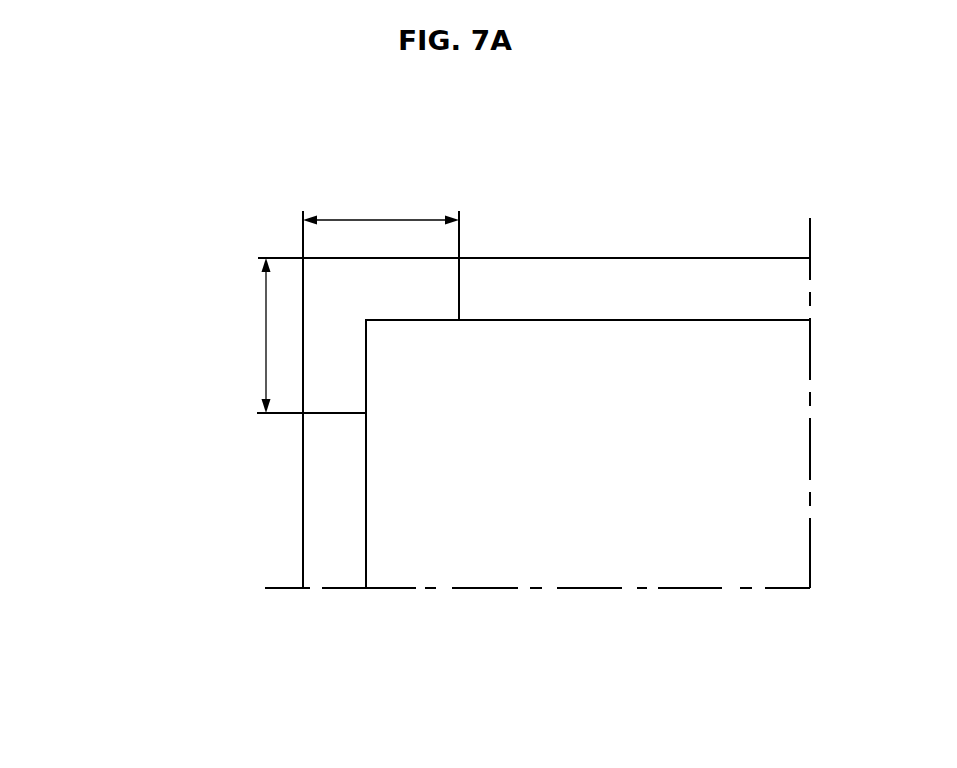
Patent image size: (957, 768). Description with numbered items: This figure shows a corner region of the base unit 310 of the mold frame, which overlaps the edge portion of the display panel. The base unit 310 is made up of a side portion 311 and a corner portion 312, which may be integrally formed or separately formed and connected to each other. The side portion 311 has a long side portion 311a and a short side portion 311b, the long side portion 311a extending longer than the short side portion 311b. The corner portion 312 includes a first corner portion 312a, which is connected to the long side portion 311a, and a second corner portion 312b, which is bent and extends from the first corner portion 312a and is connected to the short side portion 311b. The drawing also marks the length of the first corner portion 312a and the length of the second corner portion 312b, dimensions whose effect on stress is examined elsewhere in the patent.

The base unit 310 is at (325, 148).
The side portion 311 is at (632, 665).
The long side portion 311a is at (630, 297).
The short side portion 311b is at (338, 537).
The corner portion 312 is at (143, 423).
The first corner portion 312a is at (433, 303).
The second corner portion 312b is at (338, 400).